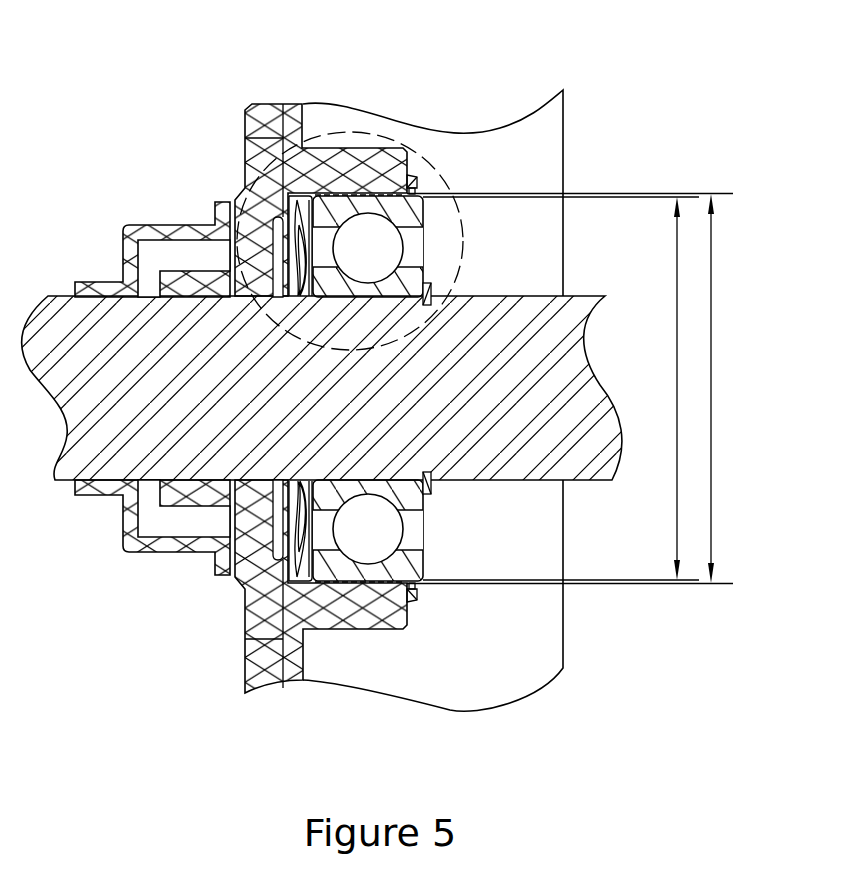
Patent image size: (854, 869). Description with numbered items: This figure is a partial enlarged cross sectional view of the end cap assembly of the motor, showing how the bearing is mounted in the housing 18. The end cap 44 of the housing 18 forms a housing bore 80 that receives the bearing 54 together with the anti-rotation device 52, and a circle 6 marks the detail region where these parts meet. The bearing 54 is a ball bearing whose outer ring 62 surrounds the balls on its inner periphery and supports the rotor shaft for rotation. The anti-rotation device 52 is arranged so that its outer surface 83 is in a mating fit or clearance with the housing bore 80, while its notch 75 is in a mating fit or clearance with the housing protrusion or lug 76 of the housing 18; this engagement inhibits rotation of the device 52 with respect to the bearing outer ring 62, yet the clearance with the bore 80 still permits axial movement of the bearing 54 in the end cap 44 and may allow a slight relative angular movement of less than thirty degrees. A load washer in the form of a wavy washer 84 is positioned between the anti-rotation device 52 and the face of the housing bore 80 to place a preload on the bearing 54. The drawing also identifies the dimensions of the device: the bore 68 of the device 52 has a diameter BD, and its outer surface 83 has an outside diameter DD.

The housing 18 is at (383, 94).
The detail region 6 is at (334, 130).
The end cap 44 is at (300, 151).
The wavy washer 84 is at (294, 211).
The housing bore 80 is at (302, 207).
The outer surface 83 is at (418, 182).
The housing device engagement feature 76 is at (420, 193).
The bearing 54 is at (425, 241).
The anti-rotation device 52 is at (287, 275).
The bore 68 is at (367, 581).
The outer ring 62 is at (424, 566).
The notch 75 is at (424, 588).
The bore diameter BD is at (677, 268).
The outside diameter DD is at (711, 348).